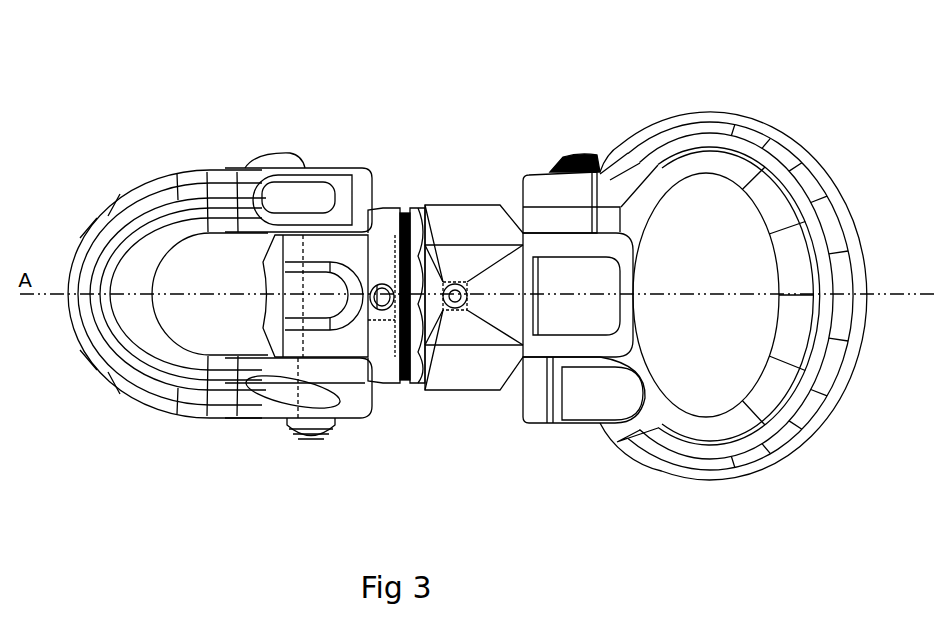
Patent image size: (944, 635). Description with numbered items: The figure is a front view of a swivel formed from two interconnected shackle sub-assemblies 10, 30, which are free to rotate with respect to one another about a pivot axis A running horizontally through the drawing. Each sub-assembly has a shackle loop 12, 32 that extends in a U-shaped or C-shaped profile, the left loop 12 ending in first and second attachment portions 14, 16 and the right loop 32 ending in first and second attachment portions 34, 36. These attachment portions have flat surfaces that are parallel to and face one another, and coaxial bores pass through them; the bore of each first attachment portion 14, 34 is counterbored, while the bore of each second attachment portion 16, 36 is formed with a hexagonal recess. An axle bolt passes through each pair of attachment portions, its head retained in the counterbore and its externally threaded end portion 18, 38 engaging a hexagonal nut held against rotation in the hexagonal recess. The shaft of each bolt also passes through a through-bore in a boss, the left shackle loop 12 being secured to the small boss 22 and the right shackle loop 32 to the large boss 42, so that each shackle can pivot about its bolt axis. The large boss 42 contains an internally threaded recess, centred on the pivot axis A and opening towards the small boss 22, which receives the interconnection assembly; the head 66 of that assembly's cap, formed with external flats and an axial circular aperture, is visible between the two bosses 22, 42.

The shackle sub-assembly 10 is at (196, 128).
The shackle loop 12 is at (130, 190).
The first attachment portion 14 is at (344, 168).
The second attachment portion 16 is at (350, 418).
The externally threaded end portion 18 is at (308, 436).
The small boss 22 is at (253, 337).
The shackle sub-assembly 30 is at (698, 86).
The shackle loop 32 is at (750, 113).
The first attachment portion 34 is at (548, 425).
The second attachment portion 36 is at (533, 173).
The externally threaded end portion 38 is at (592, 156).
The large boss 42 is at (458, 203).
The head 66 is at (410, 382).